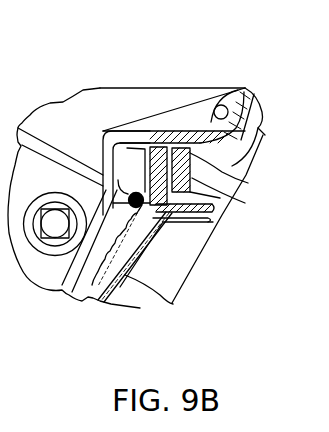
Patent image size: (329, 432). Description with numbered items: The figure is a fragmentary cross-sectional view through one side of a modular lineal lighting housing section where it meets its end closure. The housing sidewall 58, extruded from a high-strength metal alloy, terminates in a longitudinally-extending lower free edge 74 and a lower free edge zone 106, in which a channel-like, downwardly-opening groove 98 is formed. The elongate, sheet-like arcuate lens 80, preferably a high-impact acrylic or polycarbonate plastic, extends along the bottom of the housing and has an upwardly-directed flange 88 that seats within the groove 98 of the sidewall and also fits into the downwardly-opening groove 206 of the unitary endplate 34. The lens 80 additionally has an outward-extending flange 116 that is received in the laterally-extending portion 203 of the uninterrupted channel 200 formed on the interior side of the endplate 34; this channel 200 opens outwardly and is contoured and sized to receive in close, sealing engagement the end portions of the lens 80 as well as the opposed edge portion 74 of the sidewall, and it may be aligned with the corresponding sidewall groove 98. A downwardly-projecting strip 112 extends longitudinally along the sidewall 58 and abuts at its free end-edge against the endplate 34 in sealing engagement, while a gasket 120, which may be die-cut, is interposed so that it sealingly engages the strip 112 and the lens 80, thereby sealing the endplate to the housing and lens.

The unitary endplate 34 is at (188, 107).
The housing sidewall 58 is at (262, 132).
The lower free edge 74 is at (246, 175).
The lens 80 is at (176, 304).
The upwardly-directed flange 88 is at (232, 206).
The groove 98 is at (137, 141).
The lower free edge zone 106 is at (143, 152).
The downwardly-projecting strip 112 is at (228, 195).
The outward-extending flange 116 is at (192, 215).
The gasket 120 is at (228, 214).
The channel 200 is at (140, 307).
The laterally-extending portion 203 is at (203, 222).
The groove 206 is at (168, 147).